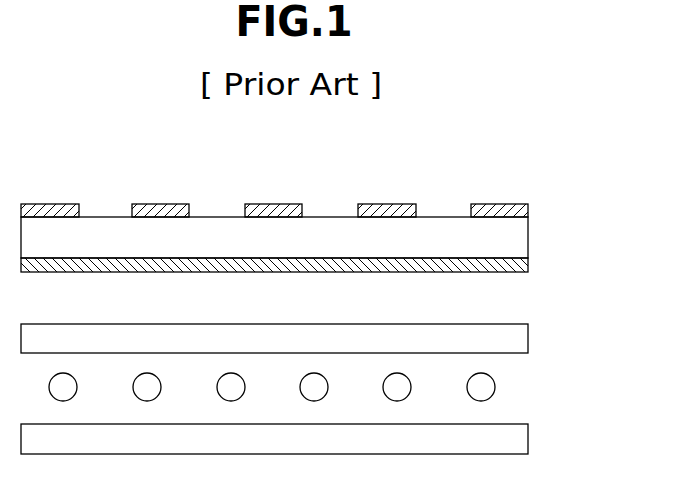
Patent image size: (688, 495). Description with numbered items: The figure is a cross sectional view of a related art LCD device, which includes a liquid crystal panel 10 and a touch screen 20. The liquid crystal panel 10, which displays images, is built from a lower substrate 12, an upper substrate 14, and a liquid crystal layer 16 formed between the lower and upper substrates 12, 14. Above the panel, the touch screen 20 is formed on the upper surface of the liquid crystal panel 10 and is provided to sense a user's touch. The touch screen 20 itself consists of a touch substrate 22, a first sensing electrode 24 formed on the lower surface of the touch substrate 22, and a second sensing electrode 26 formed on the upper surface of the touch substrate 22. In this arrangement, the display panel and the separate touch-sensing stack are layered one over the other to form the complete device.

The liquid crystal panel 10 is at (335, 389).
The lower substrate 12 is at (314, 439).
The upper substrate 14 is at (522, 338).
The liquid crystal layer 16 is at (522, 388).
The touch screen 20 is at (330, 237).
The touch substrate 22 is at (520, 238).
The first sensing electrode 24 is at (307, 264).
The second sensing electrode 26 is at (522, 210).